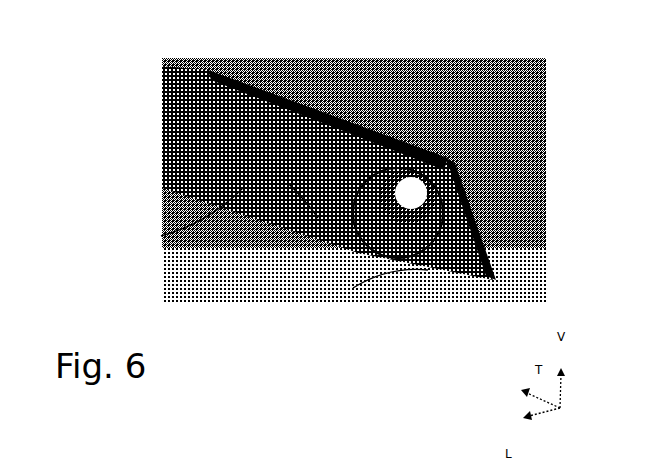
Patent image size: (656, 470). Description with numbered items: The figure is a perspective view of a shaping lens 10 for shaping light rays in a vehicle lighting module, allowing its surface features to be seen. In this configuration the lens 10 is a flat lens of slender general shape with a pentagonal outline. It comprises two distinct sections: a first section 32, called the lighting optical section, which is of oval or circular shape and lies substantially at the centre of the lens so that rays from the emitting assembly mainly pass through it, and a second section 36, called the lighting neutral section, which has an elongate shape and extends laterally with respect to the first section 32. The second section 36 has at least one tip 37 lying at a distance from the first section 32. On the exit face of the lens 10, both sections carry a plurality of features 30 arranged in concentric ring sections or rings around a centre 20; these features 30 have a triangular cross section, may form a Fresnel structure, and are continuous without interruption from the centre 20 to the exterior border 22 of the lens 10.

The shaping lens 10 is at (505, 50).
The centre 20 is at (345, 280).
The exterior border 22 is at (153, 102).
The features 30 is at (153, 228).
The first section 32 is at (410, 263).
The second section 36 is at (310, 210).
The tip 37 is at (153, 60).